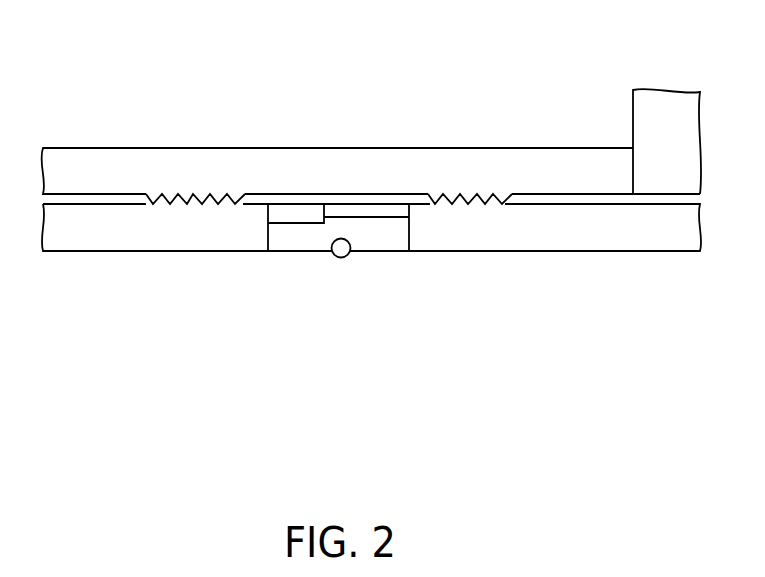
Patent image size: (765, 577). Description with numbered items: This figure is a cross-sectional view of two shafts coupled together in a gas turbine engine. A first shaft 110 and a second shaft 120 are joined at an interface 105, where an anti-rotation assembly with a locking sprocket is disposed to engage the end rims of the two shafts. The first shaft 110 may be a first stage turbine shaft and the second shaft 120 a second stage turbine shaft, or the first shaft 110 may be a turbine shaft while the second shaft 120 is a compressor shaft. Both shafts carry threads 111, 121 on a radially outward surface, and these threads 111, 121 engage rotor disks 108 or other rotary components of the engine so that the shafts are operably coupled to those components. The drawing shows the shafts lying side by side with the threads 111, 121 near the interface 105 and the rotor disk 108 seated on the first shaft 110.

The interface 105 is at (342, 286).
The rotor disk 108 is at (653, 128).
The first shaft 110 is at (447, 232).
The threads 111 is at (492, 200).
The second shaft 120 is at (243, 240).
The threads 121 is at (182, 198).